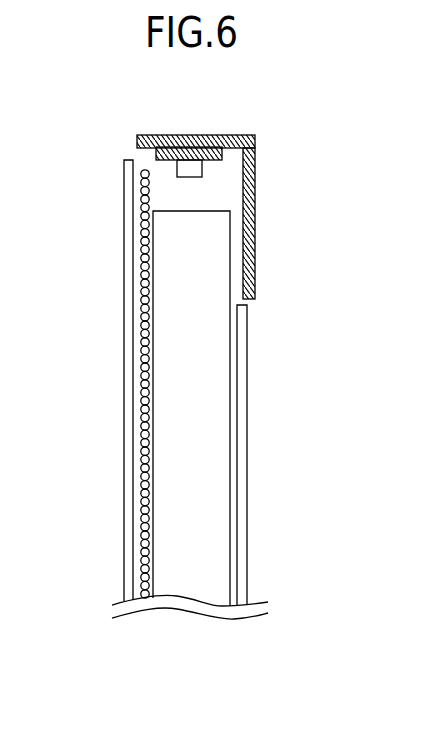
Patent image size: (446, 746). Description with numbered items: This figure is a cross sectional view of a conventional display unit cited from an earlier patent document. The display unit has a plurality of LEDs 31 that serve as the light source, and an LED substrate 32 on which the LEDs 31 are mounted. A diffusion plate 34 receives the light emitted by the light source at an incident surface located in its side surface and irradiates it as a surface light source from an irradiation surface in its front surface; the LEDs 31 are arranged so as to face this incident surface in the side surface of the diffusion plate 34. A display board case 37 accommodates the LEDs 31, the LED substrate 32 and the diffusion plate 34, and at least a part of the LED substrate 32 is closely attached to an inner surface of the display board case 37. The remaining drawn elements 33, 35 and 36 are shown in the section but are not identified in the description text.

The LED 31 is at (178, 170).
The LED substrate 32 is at (222, 152).
The housing frame 33 is at (257, 212).
The diffusion plate 34 is at (218, 477).
The light source array 35 is at (142, 343).
The reflection sheet 36 is at (248, 375).
The display board case 37 is at (122, 261).